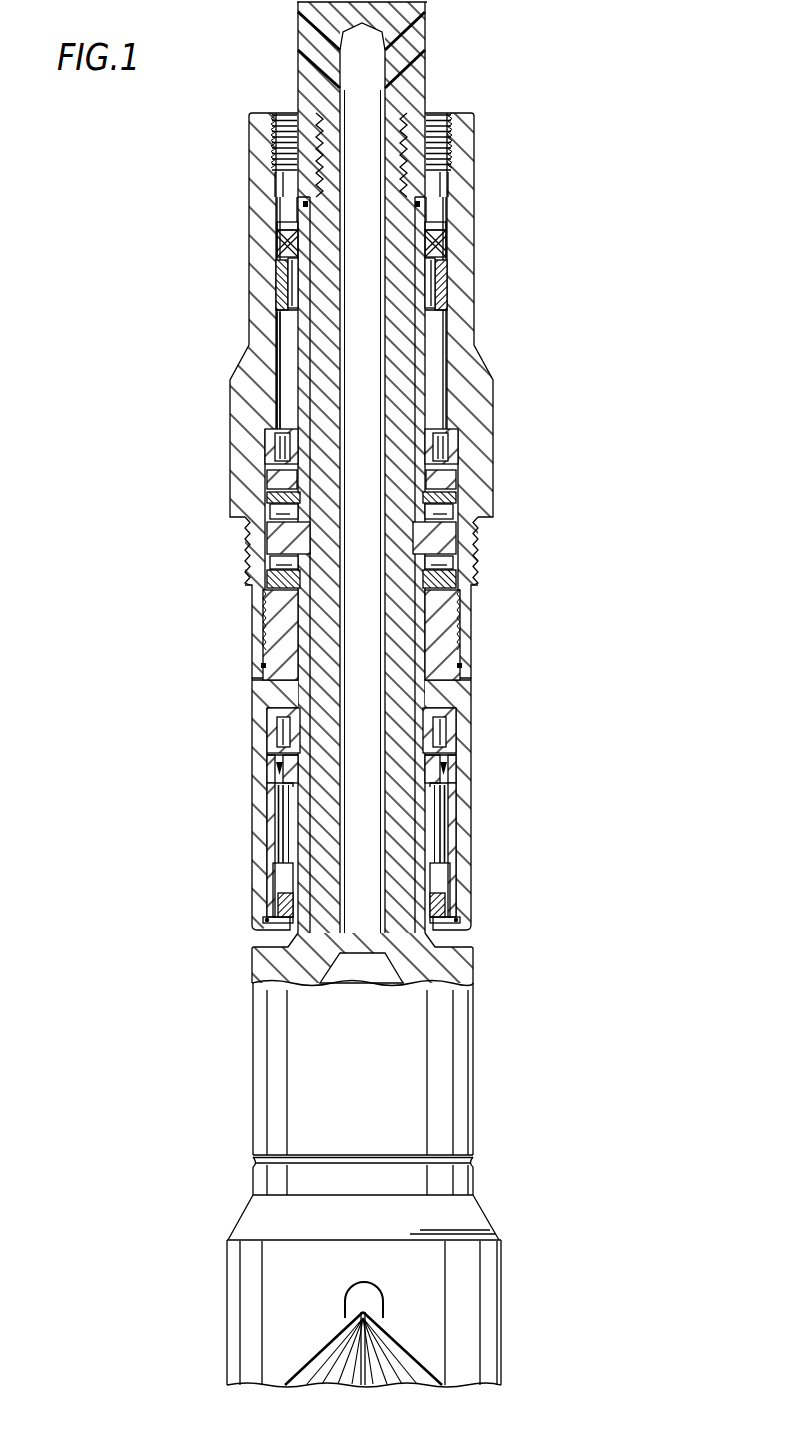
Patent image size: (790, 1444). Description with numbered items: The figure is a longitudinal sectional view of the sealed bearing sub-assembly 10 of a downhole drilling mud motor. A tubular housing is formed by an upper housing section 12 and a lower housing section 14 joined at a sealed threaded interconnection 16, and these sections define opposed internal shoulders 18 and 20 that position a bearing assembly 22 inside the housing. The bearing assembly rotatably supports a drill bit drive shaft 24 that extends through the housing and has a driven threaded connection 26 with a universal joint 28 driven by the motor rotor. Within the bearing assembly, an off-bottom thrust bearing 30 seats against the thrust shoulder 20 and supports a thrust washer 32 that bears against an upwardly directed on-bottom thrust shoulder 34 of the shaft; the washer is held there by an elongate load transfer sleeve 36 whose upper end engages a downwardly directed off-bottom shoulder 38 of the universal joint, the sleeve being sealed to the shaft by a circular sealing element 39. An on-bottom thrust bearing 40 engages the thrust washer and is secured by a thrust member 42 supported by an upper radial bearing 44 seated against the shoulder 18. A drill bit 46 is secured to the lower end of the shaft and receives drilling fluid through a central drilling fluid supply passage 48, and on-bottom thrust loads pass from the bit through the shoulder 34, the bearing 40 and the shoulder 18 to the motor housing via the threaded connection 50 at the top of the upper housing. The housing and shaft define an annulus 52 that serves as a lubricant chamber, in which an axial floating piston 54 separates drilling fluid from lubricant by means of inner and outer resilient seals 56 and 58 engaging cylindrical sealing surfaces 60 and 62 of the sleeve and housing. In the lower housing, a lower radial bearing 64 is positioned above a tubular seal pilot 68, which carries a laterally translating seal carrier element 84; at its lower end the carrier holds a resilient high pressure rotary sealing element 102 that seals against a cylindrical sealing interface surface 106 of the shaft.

The sealed bearing sub-assembly 10 is at (391, 694).
The upper housing section 12 is at (260, 267).
The lower housing section 14 is at (257, 720).
The sealed threaded interconnection 16 is at (265, 618).
The internal shoulder 18 is at (267, 438).
The internal shoulder 20 is at (473, 580).
The bearing assembly 22 is at (463, 487).
The drill bit drive shaft 24 is at (460, 1067).
The driven threaded connection 26 is at (410, 143).
The universal joint 28 is at (422, 75).
The off-bottom thrust bearing 30 is at (248, 567).
The thrust washer 32 is at (457, 542).
The on-bottom thrust shoulder 34 is at (265, 545).
The load transfer sleeve 36 is at (285, 386).
The off-bottom shoulder 38 is at (305, 204).
The circular sealing element 39 is at (415, 205).
The on-bottom thrust bearing 40 is at (268, 497).
The thrust member 42 is at (268, 480).
The upper radial bearing 44 is at (453, 452).
The drill bit 46 is at (245, 1338).
The central drilling fluid supply passage 48 is at (348, 938).
The threaded connection 50 is at (277, 145).
The annulus 52 is at (437, 410).
The axial floating piston 54 is at (440, 293).
The inner resilient seal 56 is at (420, 224).
The outer resilient seal 58 is at (430, 250).
The cylindrical sealing surface 60 is at (278, 226).
The cylindrical sealing surface 62 is at (278, 340).
The lower radial bearing 64 is at (453, 733).
The seal pilot 68 is at (450, 772).
The laterally translating seal carrier element 84 is at (280, 828).
The resilient high pressure rotary sealing element 102 is at (443, 898).
The cylindrical sealing interface surface 106 is at (455, 933).